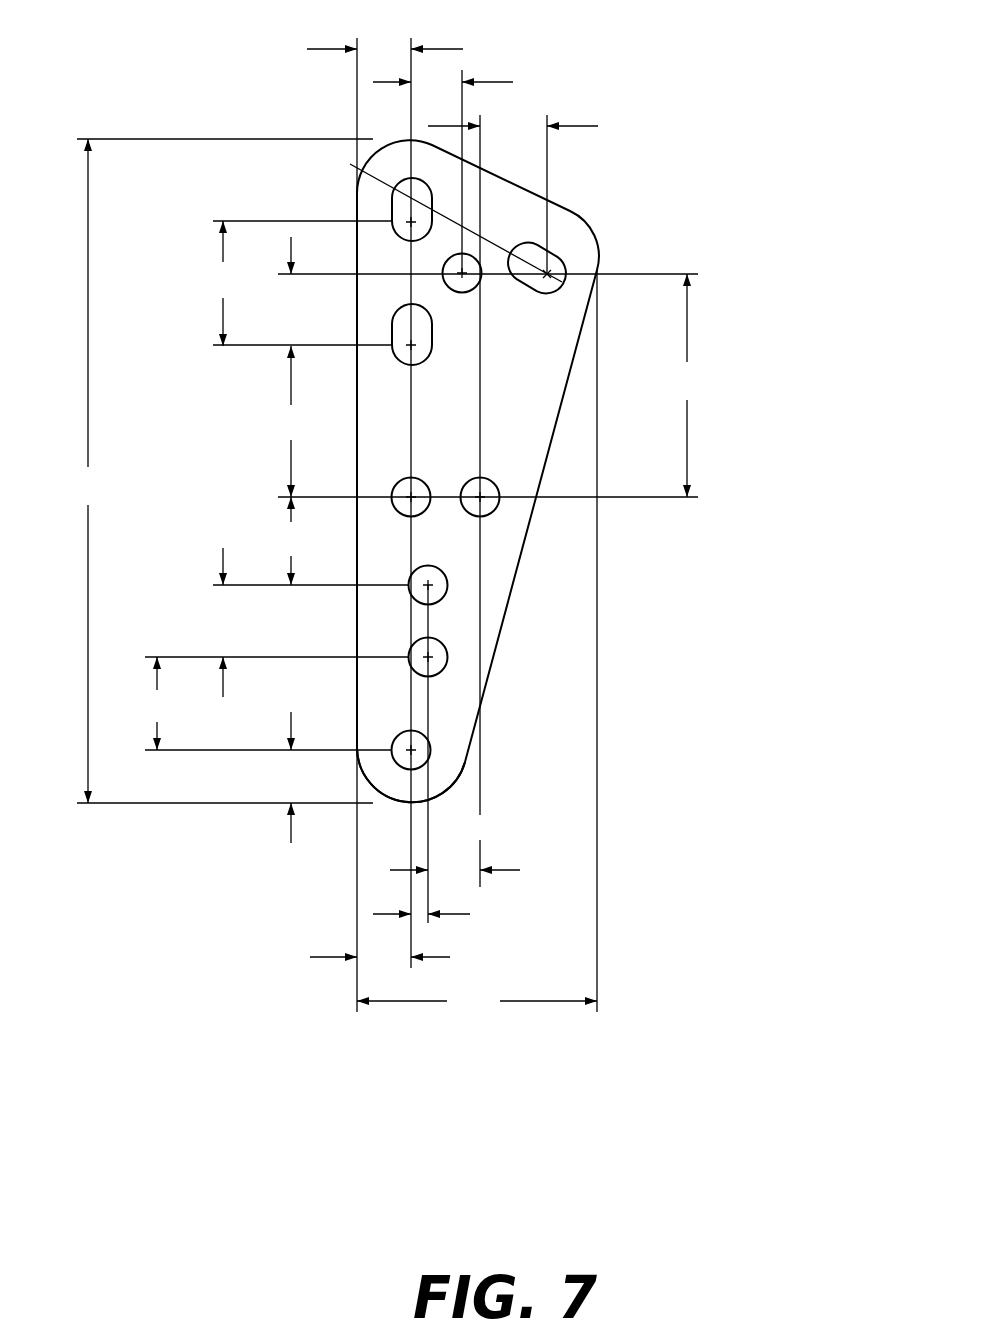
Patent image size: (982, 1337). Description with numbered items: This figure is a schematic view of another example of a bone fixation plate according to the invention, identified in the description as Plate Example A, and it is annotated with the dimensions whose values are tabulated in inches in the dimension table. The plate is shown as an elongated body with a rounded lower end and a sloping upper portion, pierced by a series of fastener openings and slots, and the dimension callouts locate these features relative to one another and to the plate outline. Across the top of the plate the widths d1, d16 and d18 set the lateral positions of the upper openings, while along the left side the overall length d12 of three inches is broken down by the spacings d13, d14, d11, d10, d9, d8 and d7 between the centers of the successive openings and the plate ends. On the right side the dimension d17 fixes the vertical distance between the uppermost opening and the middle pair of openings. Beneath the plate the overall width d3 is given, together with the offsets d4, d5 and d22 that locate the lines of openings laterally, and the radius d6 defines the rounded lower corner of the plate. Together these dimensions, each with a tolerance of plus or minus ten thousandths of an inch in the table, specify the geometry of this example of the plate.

The dimension d1 is at (385, 52).
The dimension d3 is at (477, 1004).
The dimension d4 is at (380, 956).
The dimension d5 is at (440, 914).
The dimension d6 is at (447, 802).
The dimension d7 is at (291, 777).
The dimension d8 is at (156, 703).
The dimension d9 is at (228, 622).
The dimension d10 is at (300, 541).
The dimension d11 is at (298, 451).
The dimension d12 is at (95, 471).
The dimension d13 is at (231, 283).
The dimension d14 is at (298, 321).
The dimension d16 is at (443, 86).
The dimension d17 is at (691, 385).
The dimension d18 is at (513, 129).
The dimension d22 is at (455, 869).